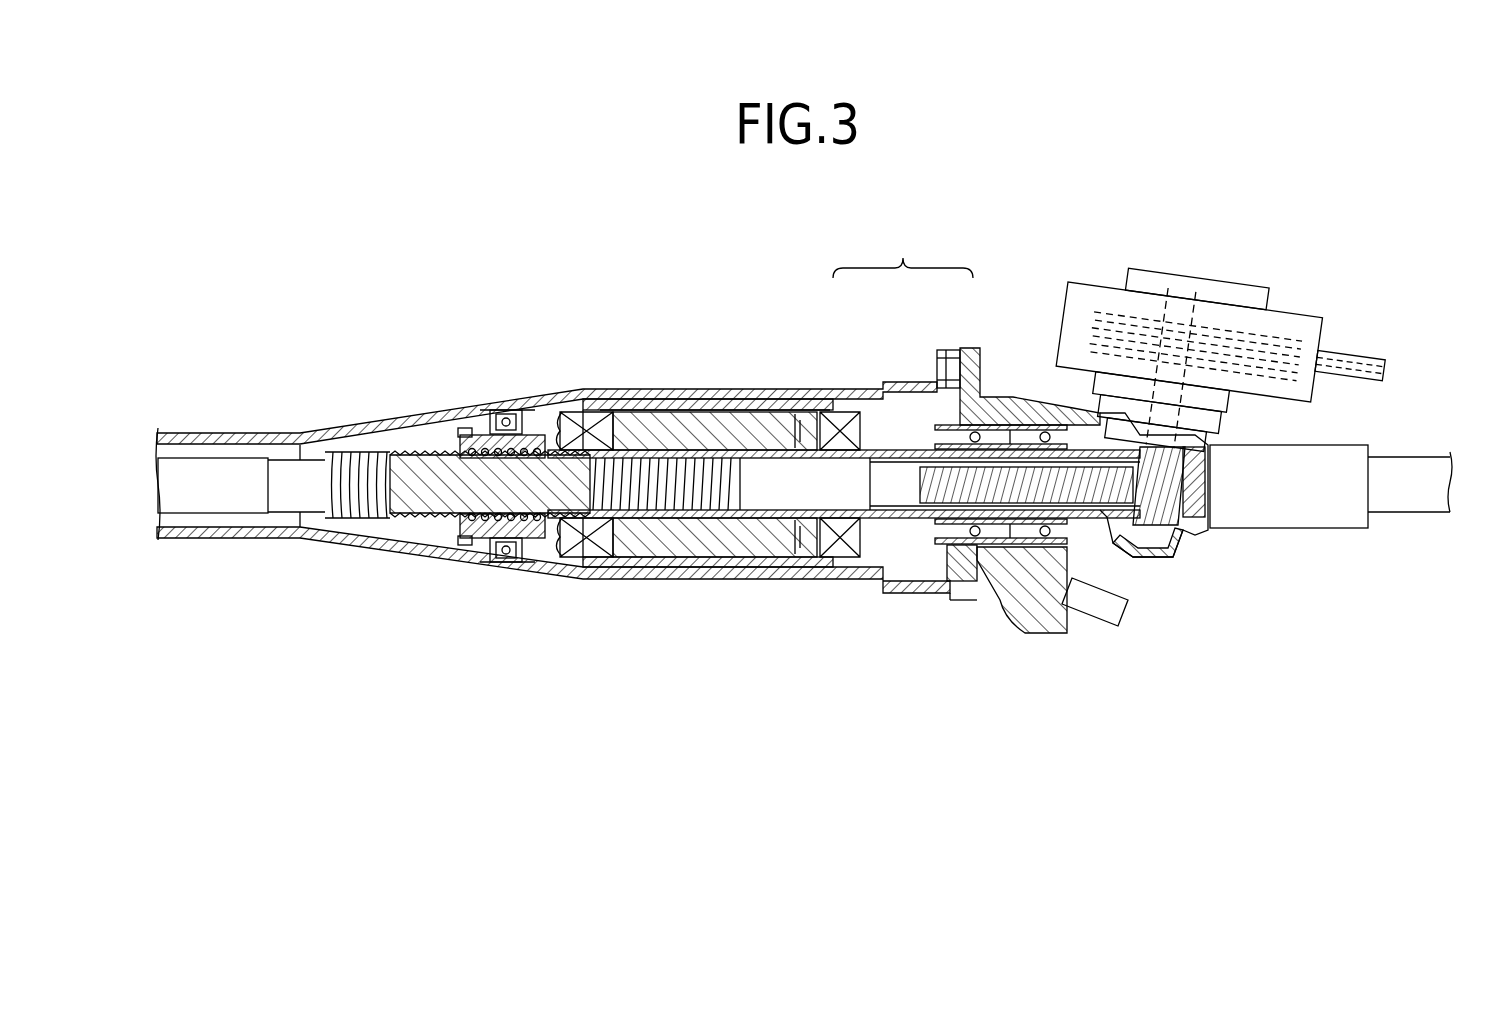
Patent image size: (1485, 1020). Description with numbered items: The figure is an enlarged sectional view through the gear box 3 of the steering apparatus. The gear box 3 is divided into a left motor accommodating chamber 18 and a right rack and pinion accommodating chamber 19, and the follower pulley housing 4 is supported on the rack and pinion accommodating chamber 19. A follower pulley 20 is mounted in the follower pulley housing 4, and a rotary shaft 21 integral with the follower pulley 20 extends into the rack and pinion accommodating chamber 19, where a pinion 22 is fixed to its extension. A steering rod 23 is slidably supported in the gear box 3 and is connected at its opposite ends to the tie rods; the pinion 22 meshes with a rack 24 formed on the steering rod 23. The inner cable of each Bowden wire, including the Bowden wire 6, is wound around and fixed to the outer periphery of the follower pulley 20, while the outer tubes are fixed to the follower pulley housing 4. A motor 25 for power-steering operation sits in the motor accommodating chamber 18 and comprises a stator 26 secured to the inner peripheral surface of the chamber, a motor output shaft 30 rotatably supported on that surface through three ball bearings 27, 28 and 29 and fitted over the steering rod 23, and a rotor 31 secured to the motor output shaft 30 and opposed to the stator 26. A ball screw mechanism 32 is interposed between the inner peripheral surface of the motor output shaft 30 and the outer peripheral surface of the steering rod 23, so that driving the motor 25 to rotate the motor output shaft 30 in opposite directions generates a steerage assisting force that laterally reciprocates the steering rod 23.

The gear box 3 is at (903, 249).
The follower pulley housing 4 is at (1225, 333).
The Bowden wire 6 is at (1352, 349).
The motor accommodating chamber 18 is at (832, 387).
The rack and pinion accommodating chamber 19 is at (1003, 382).
The follower pulley 20 is at (1275, 277).
The rotary shaft 21 is at (1225, 247).
The pinion 22 is at (1192, 528).
The steering rod 23 is at (390, 449).
The rack 24 is at (1107, 500).
The motor 25 is at (850, 578).
The stator 26 is at (690, 579).
The ball bearing 27 is at (505, 562).
The ball bearing 28 is at (975, 592).
The ball bearing 29 is at (1045, 550).
The motor output shaft 30 is at (790, 460).
The rotor 31 is at (718, 430).
The ball screw mechanism 32 is at (458, 521).